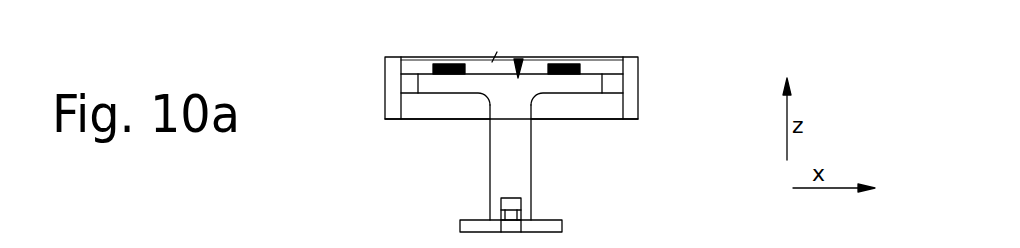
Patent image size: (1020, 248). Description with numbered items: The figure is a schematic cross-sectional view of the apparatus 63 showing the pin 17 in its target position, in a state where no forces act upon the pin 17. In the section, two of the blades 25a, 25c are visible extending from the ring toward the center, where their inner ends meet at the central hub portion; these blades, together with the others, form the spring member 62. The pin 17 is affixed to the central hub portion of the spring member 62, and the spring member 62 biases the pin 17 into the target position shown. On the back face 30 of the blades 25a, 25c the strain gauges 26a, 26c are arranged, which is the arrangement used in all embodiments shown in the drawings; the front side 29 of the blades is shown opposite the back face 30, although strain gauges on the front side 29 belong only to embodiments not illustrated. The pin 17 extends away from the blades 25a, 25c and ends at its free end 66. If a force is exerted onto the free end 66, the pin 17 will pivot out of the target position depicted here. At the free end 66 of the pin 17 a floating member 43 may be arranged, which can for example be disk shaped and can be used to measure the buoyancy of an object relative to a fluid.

The pin 17 is at (512, 167).
The blade 25a is at (441, 82).
The blade 25c is at (562, 83).
The strain gauge 26a is at (448, 65).
The strain gauge 26c is at (558, 63).
The front side 29 is at (462, 95).
The back face 30 is at (483, 73).
The floating member 43 is at (460, 222).
The spring member 62 is at (520, 58).
The apparatus 63 is at (695, 76).
The free end 66 is at (540, 212).